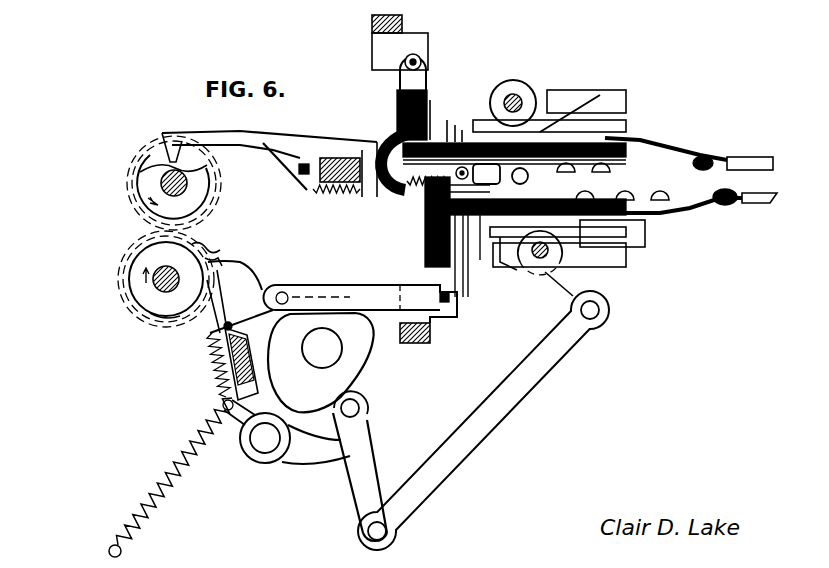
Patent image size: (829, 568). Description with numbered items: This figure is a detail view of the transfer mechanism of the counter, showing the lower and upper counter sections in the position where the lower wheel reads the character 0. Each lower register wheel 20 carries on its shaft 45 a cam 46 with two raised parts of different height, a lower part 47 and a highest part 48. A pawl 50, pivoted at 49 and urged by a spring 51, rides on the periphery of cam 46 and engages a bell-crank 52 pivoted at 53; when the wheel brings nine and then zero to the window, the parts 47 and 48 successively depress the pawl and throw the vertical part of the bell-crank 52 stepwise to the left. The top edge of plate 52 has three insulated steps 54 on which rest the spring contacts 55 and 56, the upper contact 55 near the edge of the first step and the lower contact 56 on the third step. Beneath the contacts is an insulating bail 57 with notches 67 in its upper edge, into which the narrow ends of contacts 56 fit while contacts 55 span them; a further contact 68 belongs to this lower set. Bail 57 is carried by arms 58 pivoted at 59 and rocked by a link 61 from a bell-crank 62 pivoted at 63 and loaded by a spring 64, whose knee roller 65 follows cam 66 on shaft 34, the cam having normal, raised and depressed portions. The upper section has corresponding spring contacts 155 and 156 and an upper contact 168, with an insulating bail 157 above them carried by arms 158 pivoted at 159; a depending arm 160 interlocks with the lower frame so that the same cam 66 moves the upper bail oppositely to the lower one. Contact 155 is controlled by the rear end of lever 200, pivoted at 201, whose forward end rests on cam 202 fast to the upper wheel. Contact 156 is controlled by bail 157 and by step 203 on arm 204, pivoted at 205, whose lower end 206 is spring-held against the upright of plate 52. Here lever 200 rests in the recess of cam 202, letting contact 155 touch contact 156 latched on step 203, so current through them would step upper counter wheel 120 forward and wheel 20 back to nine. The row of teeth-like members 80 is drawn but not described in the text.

The character 0 is at (132, 162).
The register wheel 20 is at (152, 322).
The shaft 34 is at (321, 330).
The shaft 45 is at (152, 290).
The cam 46 is at (173, 308).
The lower raised part 47 is at (208, 250).
The highest part of the cam 48 is at (222, 262).
The pivot 49 is at (212, 333).
The pawl 50 is at (226, 268).
The spring 51 is at (218, 375).
The bell-crank 52 is at (366, 296).
The pivot 53 is at (440, 320).
The steps 54 is at (428, 240).
The spring contact 55 is at (416, 210).
The spring contact 56 is at (475, 240).
The bail 57 is at (466, 285).
The arms 58 is at (465, 210).
The pivot 59 is at (562, 258).
The link 61 is at (498, 412).
The bell-crank 62 is at (368, 441).
The pivot 63 is at (270, 455).
The spring 64 is at (180, 480).
The roller 65 is at (368, 407).
The cam 66 is at (366, 360).
The notches 67 is at (470, 262).
The contact 68 is at (522, 272).
The contact bank 80 is at (532, 170).
The counter wheel 120 is at (136, 213).
The spring contact 155 is at (455, 142).
The spring contact 156 is at (462, 142).
The bail 157 is at (447, 140).
The arms 158 is at (508, 88).
The pivot 159 is at (521, 100).
The depending arm 160 is at (558, 116).
The upper contact 168 is at (536, 125).
The lever 200 is at (271, 142).
The pivot 201 is at (299, 170).
The cam 202 is at (200, 191).
The step 203 is at (440, 130).
The arm 204 is at (380, 150).
The pivot 205 is at (416, 58).
The lower end 206 is at (410, 191).